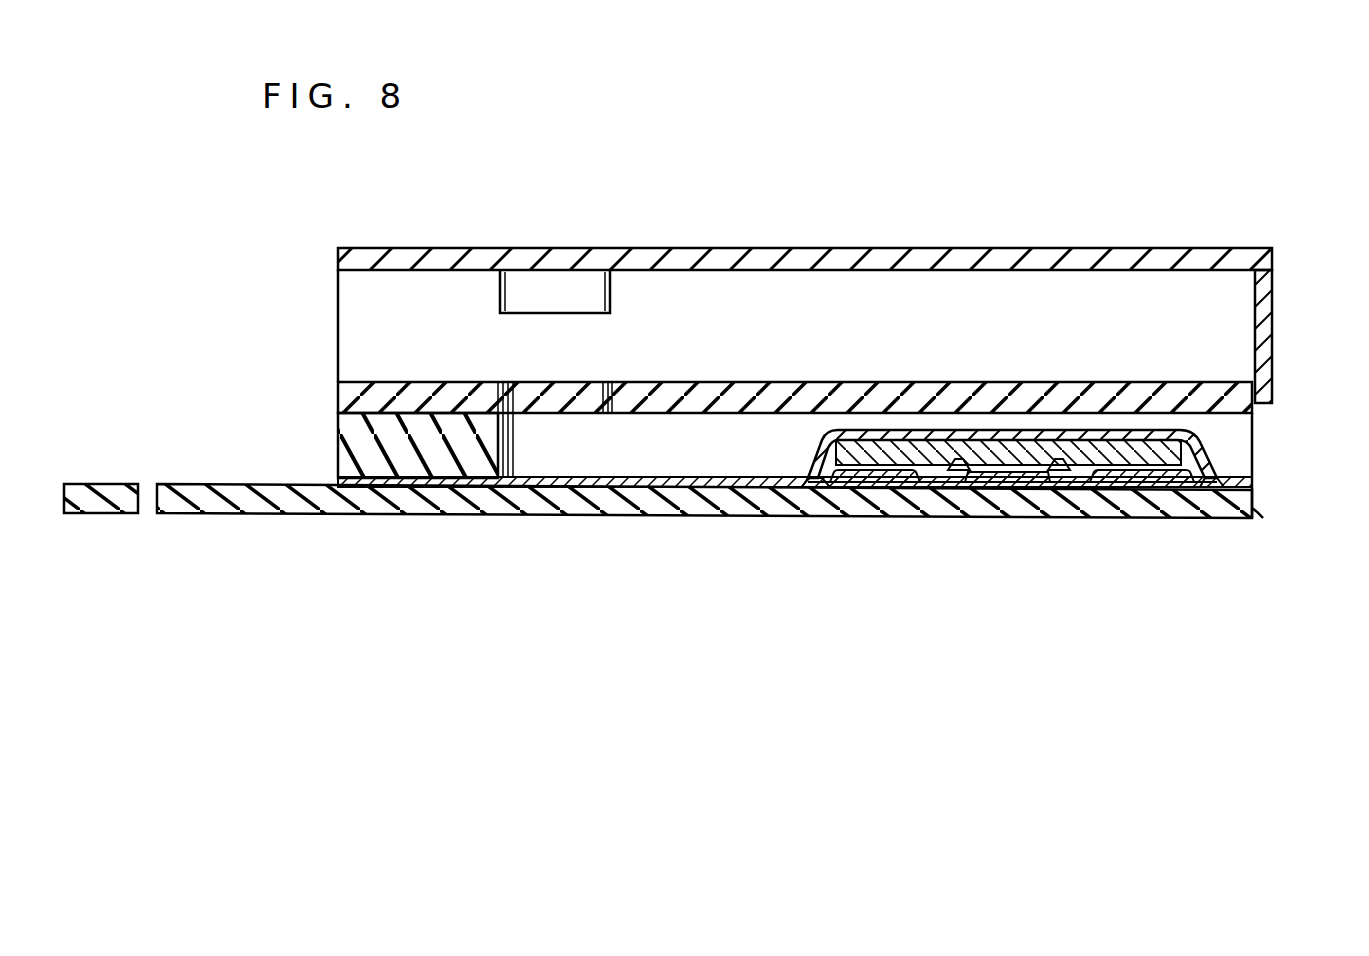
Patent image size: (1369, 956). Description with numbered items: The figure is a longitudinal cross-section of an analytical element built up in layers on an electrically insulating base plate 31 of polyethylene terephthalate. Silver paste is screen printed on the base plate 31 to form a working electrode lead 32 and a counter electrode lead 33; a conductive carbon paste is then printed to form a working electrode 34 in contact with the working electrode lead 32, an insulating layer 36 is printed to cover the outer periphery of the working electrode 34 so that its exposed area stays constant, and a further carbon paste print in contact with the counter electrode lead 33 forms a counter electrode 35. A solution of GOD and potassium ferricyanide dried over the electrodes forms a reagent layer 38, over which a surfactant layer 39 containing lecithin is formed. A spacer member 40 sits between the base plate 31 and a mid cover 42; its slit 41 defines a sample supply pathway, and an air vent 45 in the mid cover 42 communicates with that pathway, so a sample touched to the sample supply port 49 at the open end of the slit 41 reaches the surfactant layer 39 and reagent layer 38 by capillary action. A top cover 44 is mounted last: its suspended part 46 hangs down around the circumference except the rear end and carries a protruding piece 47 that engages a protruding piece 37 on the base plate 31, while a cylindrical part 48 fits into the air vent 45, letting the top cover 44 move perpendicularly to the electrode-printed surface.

The base plate 31 is at (205, 505).
The working electrode lead 32 is at (1018, 488).
The counter electrode lead 33 is at (875, 480).
The working electrode 34 is at (960, 484).
The counter electrode 35 is at (825, 500).
The insulating layer 36 is at (345, 485).
The protruding piece 37 is at (1256, 512).
The reagent layer 38 is at (905, 455).
The surfactant layer 39 is at (1178, 435).
The spacer member 40 is at (355, 440).
The slit 41 is at (662, 455).
The mid cover 42 is at (360, 400).
The top cover 44 is at (850, 262).
The air vent 45 is at (552, 400).
The suspended part 46 is at (398, 315).
The protruding piece 47 is at (1268, 400).
The cylindrical part 48 is at (612, 300).
The sample supply port 49 is at (1232, 460).